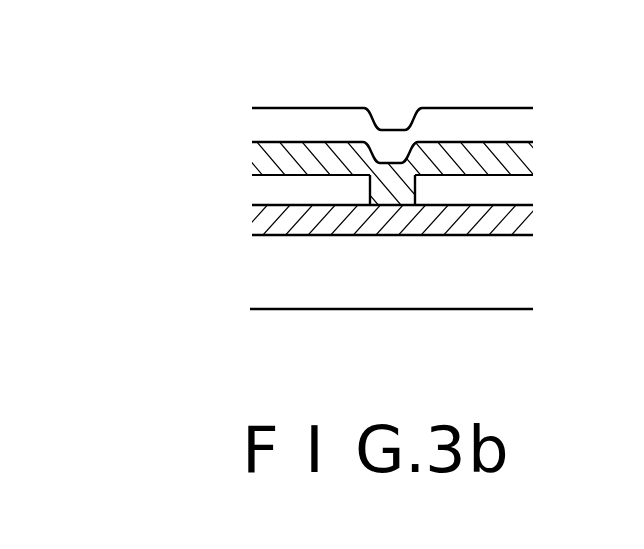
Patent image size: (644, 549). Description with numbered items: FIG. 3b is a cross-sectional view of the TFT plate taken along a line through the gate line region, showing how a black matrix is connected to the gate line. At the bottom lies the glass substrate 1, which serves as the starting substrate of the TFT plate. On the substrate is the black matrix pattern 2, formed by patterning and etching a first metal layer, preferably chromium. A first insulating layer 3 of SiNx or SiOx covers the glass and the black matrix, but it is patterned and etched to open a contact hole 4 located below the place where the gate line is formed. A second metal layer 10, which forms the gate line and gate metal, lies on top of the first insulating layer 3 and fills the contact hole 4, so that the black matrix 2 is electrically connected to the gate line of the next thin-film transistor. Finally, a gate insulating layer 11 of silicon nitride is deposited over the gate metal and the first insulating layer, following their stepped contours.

The glass substrate 1 is at (435, 272).
The black matrix pattern 2 is at (505, 228).
The first insulating layer 3 is at (285, 191).
The contact hole 4 is at (383, 203).
The second metal layer 10 is at (298, 152).
The gate insulating layer 11 is at (345, 118).